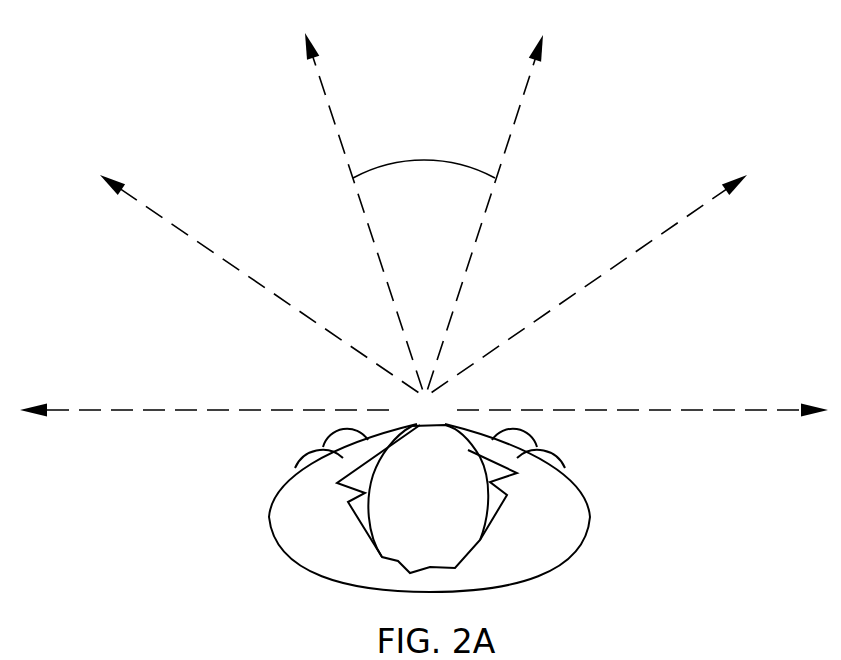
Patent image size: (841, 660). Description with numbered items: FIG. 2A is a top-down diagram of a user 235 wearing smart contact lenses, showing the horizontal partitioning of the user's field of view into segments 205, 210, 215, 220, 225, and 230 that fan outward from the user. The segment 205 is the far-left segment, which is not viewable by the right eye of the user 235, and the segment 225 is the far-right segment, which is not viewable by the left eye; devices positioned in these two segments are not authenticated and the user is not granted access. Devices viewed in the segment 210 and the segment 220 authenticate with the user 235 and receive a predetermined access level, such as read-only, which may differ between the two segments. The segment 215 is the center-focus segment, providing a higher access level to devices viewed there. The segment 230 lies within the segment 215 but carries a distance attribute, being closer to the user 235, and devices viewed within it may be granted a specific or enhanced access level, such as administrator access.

The segment 205 is at (121, 350).
The segment 210 is at (218, 200).
The segment 215 is at (405, 113).
The segment 220 is at (565, 217).
The segment 225 is at (629, 363).
The segment 230 is at (405, 254).
The user 235 is at (590, 502).